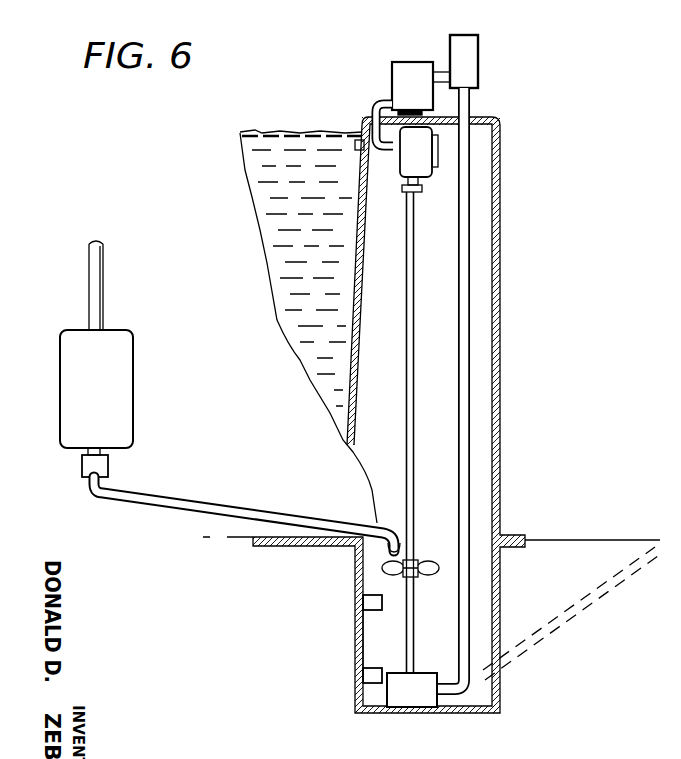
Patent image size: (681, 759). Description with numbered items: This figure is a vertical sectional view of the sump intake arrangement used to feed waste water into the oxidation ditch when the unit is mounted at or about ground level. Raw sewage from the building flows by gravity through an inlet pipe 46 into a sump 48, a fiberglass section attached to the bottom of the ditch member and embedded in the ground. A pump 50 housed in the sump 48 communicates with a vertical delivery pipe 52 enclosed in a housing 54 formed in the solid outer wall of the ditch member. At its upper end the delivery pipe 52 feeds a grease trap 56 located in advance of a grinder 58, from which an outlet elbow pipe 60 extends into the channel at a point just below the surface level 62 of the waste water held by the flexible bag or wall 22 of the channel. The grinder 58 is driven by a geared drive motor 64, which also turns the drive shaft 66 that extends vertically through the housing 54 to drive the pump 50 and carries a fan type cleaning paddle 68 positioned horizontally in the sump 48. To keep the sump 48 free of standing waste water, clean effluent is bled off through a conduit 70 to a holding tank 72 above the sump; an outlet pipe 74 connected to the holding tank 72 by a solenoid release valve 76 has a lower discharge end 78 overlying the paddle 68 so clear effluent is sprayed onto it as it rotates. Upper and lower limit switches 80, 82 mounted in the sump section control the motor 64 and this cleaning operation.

The flexible bag 22 is at (258, 235).
The inlet pipe 46 is at (569, 613).
The sump 48 is at (357, 633).
The pump 50 is at (424, 700).
The vertical delivery pipe 52 is at (463, 375).
The housing 54 is at (482, 311).
The grease trap 56 is at (472, 53).
The grinder 58 is at (410, 72).
The outlet elbow pipe 60 is at (373, 107).
The surface level 62 is at (296, 130).
The geared drive motor 64 is at (422, 153).
The drive shaft 66 is at (412, 278).
The cleaning paddle 68 is at (433, 562).
The conduit 70 is at (92, 288).
The holding tank 72 is at (110, 398).
The outlet pipe 74 is at (185, 503).
The solenoid release valve 76 is at (97, 467).
The lower discharge end 78 is at (400, 543).
The upper limit switch 80 is at (363, 603).
The lower limit switch 82 is at (363, 675).